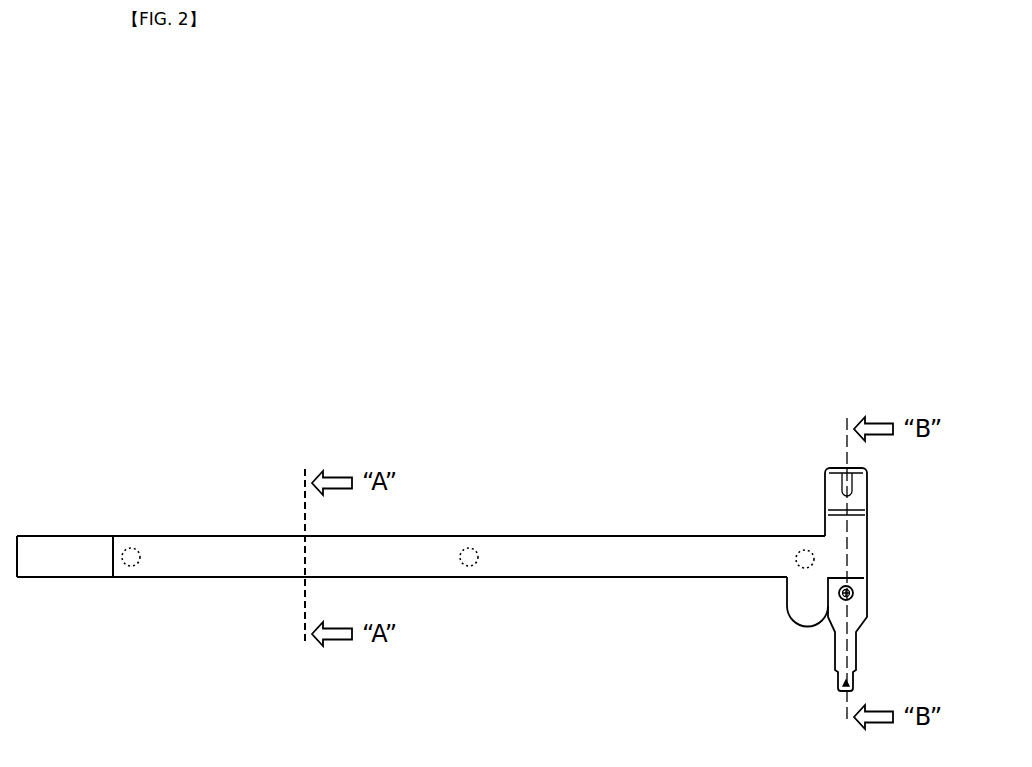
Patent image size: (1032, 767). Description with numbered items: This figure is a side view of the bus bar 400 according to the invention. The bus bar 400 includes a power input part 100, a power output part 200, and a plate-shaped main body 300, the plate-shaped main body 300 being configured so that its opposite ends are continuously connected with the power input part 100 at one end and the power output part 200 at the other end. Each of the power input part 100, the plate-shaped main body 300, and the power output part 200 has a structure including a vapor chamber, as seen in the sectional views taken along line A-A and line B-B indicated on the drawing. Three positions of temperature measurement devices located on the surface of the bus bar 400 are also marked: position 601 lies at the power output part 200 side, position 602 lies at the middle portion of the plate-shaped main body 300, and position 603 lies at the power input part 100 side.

The bus bar 400 is at (62, 402).
The power output part 200 is at (35, 528).
The plate-shaped main body 300 is at (496, 530).
The power input part 100 is at (813, 505).
The position of temperature measurement device 601 is at (135, 563).
The position of temperature measurement device 602 is at (472, 563).
The position of temperature measurement device 603 is at (803, 567).